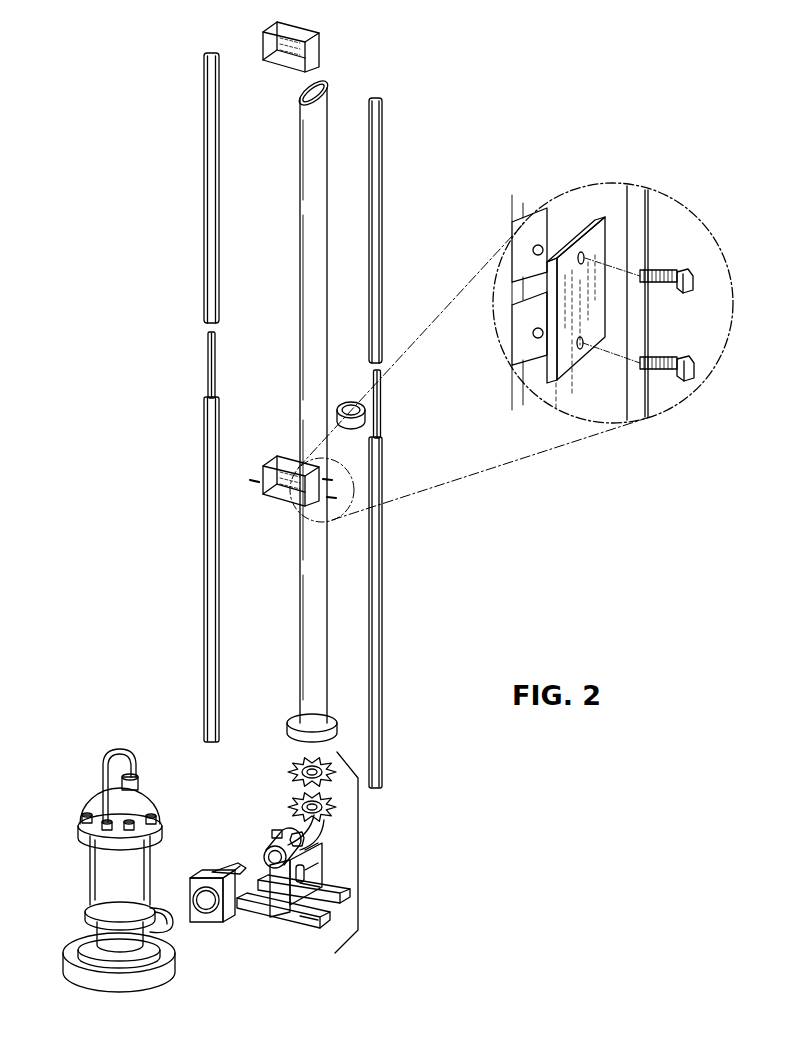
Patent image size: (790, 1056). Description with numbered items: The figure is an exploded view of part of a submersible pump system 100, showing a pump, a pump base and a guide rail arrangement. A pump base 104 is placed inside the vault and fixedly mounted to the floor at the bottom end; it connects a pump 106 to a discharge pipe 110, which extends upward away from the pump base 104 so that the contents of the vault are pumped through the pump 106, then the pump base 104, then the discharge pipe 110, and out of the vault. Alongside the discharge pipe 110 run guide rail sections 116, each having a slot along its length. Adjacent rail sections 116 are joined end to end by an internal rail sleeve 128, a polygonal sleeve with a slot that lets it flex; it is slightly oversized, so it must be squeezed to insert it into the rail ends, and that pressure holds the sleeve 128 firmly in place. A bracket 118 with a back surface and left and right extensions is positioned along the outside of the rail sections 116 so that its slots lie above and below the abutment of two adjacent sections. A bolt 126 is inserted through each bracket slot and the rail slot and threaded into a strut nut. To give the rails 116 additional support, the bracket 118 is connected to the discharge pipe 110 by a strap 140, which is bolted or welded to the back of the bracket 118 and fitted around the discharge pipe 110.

The submersible pump system 100 is at (99, 113).
The pump base 104 is at (357, 848).
The pump 106 is at (98, 793).
The discharge pipe 110 is at (313, 217).
The guide rail section 116 is at (212, 120).
The bracket 118 is at (320, 44).
The bolt 126 is at (262, 463).
The internal rail sleeve 128 is at (207, 363).
The strap 140 is at (357, 420).